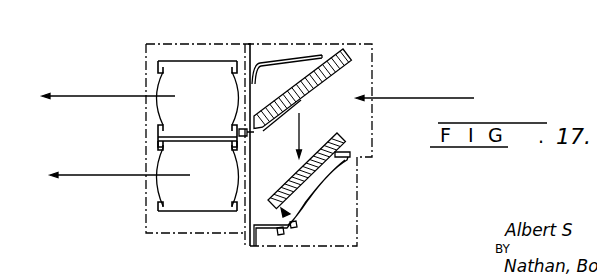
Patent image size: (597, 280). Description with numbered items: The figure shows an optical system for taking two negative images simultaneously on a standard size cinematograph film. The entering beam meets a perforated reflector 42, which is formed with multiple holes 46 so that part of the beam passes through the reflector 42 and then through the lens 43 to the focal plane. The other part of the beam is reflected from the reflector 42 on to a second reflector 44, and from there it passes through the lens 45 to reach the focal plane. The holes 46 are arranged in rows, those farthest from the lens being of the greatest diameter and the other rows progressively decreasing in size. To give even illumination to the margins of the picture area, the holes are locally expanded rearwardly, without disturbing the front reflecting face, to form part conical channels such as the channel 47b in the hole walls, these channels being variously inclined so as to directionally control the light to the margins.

The reflector 42 is at (329, 62).
The lens 43 is at (198, 104).
The reflector 44 is at (321, 174).
The lens 45 is at (198, 176).
The holes 46 is at (290, 112).
The part conical channel 47b is at (301, 80).